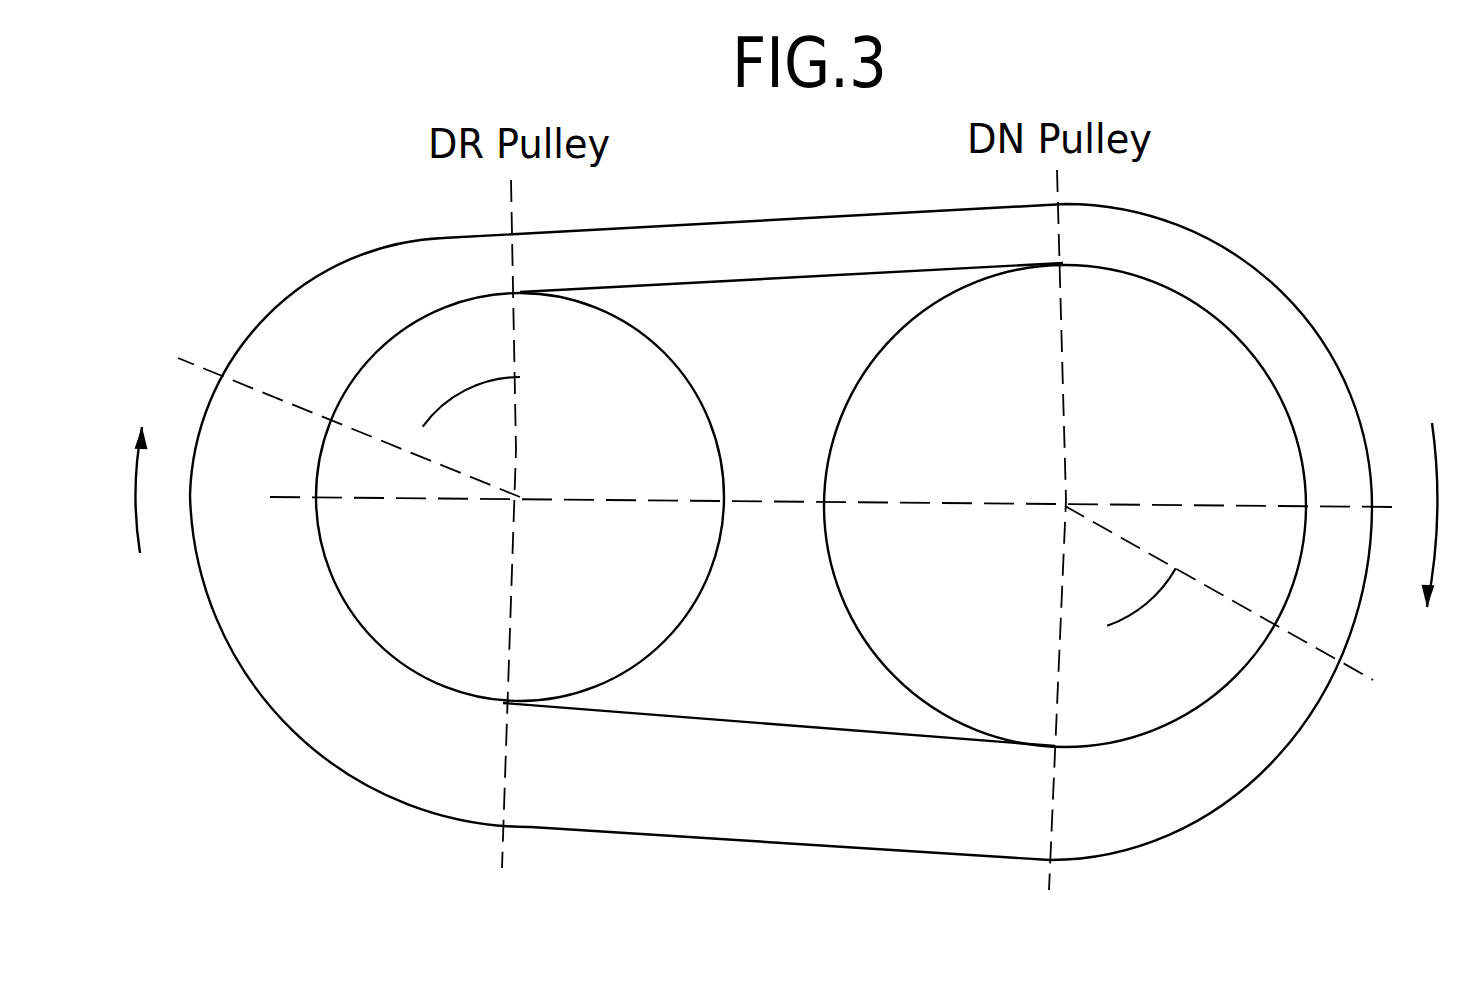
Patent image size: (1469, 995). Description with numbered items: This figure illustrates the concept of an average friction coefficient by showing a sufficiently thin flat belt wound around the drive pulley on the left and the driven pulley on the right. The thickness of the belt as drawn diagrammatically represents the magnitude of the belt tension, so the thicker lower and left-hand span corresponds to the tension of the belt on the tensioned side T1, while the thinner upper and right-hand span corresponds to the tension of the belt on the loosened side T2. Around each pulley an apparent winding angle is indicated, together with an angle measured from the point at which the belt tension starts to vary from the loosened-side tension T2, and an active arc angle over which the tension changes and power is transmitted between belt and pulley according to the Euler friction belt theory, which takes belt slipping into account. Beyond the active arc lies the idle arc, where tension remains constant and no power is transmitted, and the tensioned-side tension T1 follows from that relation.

The tension of the belt on the tensioned side T1 is at (702, 720).
The tension of the belt on the loosened side T2 is at (705, 224).